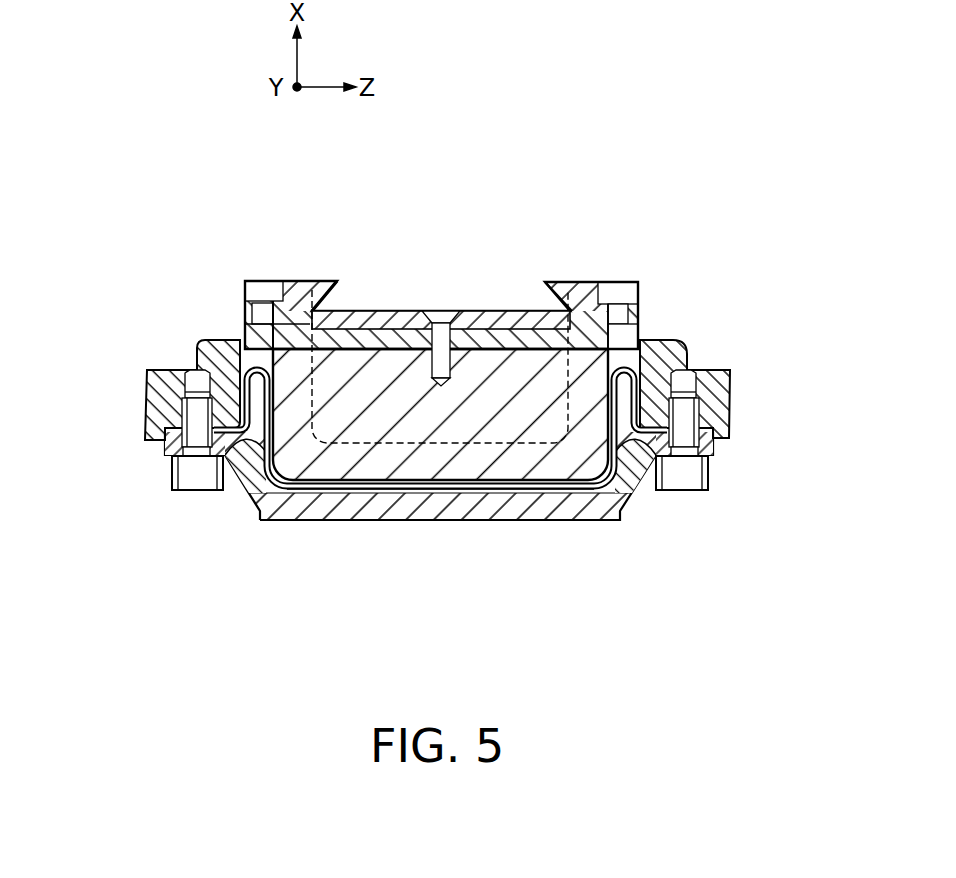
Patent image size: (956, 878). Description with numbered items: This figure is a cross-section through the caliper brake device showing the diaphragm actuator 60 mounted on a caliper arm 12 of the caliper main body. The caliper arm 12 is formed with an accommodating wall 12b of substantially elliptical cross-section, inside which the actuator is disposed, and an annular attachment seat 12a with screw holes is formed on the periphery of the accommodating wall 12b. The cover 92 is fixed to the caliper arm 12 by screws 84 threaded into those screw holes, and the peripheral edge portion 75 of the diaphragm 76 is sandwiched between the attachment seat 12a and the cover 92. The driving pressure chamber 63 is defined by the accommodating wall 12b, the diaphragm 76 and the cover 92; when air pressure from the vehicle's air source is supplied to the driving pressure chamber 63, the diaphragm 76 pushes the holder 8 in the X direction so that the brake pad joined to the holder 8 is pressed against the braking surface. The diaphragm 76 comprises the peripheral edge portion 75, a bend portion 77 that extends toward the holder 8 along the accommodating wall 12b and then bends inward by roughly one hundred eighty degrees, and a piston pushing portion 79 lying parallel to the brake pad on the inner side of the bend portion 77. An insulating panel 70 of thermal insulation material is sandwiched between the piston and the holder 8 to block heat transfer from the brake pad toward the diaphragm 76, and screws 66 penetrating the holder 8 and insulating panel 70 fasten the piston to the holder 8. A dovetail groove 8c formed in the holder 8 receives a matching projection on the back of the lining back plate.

The holder 8 is at (583, 289).
The dovetail groove 8c is at (545, 300).
The caliper arm 12 is at (684, 345).
The attachment seat 12a is at (156, 422).
The accommodating wall 12b is at (258, 354).
The diaphragm actuator 60 is at (283, 506).
The driving pressure chamber 63 is at (377, 495).
The screw 66 is at (447, 311).
The insulating panel 70 is at (388, 326).
The peripheral edge portion 75 is at (638, 440).
The diaphragm 76 is at (461, 503).
The bend portion 77 is at (230, 478).
The piston pushing portion 79 is at (520, 494).
The screw 84 is at (173, 492).
The cover 92 is at (598, 514).